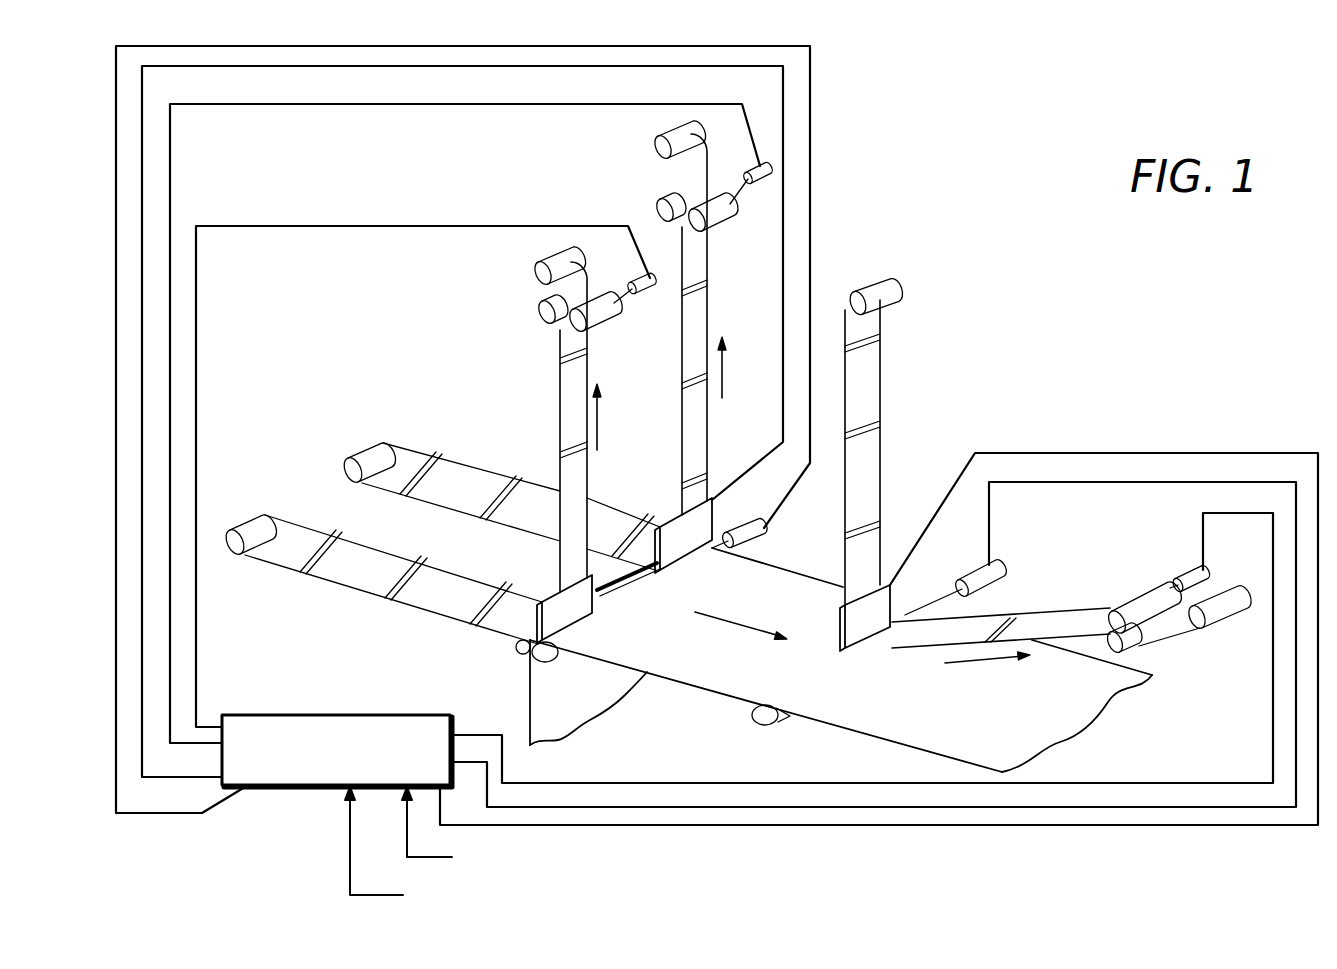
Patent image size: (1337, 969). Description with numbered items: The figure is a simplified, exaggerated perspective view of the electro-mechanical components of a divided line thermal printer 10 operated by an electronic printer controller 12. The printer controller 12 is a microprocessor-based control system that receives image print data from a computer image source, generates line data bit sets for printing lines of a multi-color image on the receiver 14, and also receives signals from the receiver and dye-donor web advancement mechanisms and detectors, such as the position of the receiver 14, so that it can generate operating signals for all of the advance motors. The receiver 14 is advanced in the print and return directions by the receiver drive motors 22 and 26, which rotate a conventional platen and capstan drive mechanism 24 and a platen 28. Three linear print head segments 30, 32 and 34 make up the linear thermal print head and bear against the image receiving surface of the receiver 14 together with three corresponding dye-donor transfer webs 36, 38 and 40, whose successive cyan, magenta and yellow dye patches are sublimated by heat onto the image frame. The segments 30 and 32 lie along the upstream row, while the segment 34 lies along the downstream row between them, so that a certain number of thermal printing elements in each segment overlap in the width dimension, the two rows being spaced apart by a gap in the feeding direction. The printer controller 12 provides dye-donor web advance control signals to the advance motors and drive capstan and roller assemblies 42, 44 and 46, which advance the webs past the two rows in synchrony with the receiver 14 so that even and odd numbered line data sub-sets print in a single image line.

The divided line thermal printer 10 is at (952, 343).
The printer controller 12 is at (320, 715).
The receiver 14 is at (555, 733).
The receiver drive motor 22 is at (766, 536).
The platen and capstan drive mechanism 24 is at (542, 662).
The receiver drive motor 26 is at (1005, 570).
The platen 28 is at (770, 730).
The print head segment 30 is at (546, 600).
The print head segment 32 is at (668, 524).
The print head segment 34 is at (893, 587).
The dye-donor transfer web 36 is at (316, 588).
The dye-donor transfer web 38 is at (452, 468).
The dye-donor transfer web 40 is at (1066, 606).
The advance motor and drive capstan and roller assembly 42 is at (560, 340).
The advance motor and drive capstan and roller assembly 44 is at (540, 282).
The advance motor and drive capstan and roller assembly 46 is at (1142, 582).